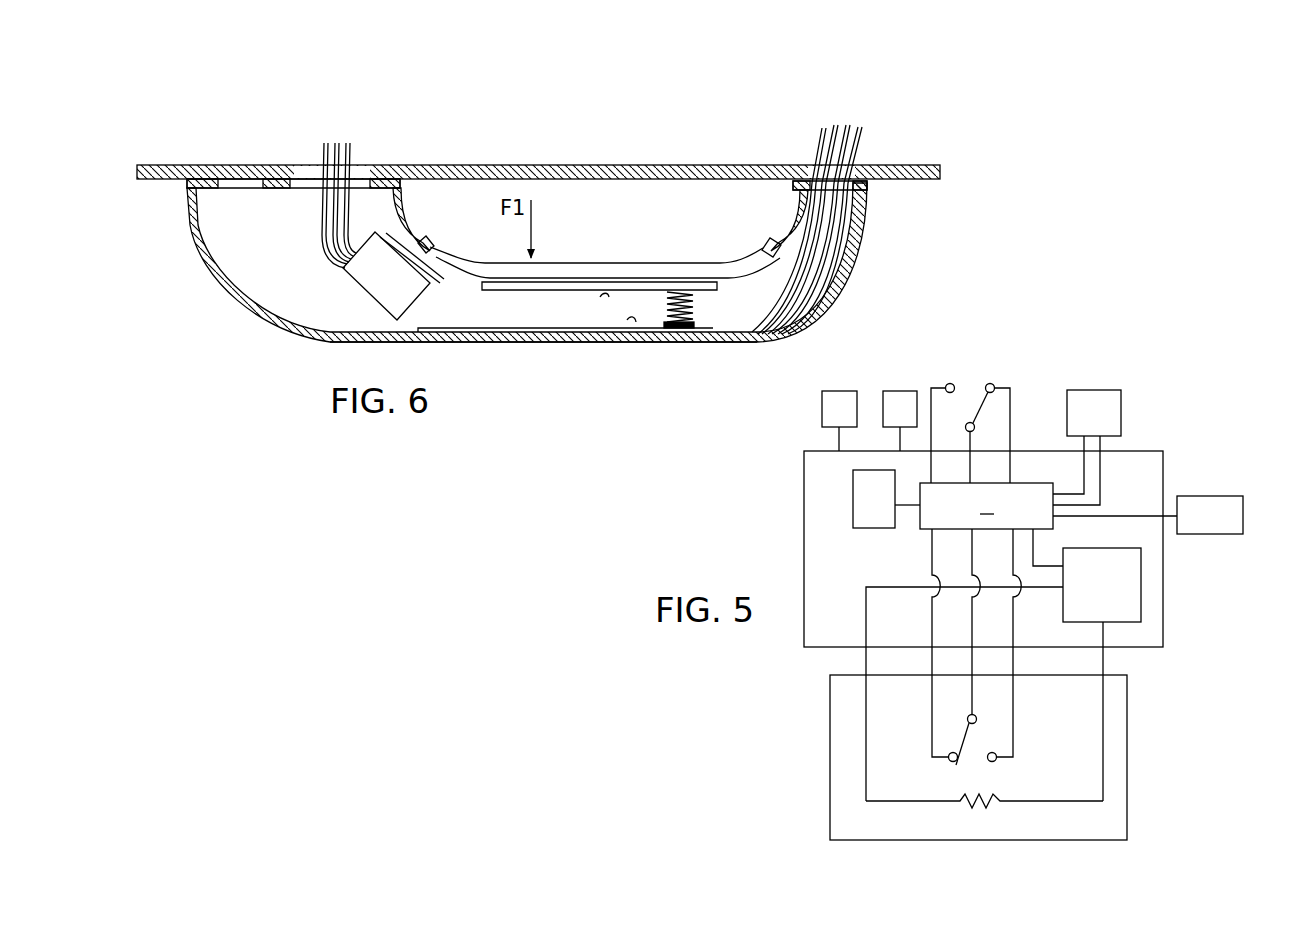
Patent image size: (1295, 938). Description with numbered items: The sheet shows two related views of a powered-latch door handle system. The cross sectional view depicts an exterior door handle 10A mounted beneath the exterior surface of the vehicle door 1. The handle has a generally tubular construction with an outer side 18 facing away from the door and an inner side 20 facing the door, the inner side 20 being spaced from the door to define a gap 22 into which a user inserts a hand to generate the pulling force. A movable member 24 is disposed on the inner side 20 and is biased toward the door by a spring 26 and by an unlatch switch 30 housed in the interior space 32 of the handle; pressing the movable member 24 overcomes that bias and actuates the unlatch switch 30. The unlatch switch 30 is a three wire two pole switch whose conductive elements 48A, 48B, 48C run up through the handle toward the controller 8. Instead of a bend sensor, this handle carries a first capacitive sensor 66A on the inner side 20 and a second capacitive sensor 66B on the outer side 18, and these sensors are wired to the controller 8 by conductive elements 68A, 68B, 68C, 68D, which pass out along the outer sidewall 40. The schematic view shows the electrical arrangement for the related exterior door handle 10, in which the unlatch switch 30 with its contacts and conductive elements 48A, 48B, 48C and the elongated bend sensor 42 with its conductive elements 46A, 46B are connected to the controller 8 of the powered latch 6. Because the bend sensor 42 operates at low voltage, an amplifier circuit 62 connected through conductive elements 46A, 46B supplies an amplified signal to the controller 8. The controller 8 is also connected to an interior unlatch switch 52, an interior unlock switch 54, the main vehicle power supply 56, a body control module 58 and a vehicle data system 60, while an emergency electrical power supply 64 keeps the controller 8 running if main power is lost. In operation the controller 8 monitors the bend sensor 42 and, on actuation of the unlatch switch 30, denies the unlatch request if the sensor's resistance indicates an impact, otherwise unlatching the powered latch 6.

In FIG. 6, the vehicle door 1 is at (162, 190).
In FIG. 6, the exterior door handle 10A is at (248, 318).
In FIG. 6, the conductive element 48A is at (327, 143).
In FIG. 5, the conductive element 48A is at (932, 660).
In FIG. 6, the conductive element 48B is at (338, 143).
In FIG. 5, the conductive element 48B is at (970, 620).
In FIG. 6, the conductive element 48C is at (349, 143).
In FIG. 5, the conductive element 48C is at (1013, 627).
In FIG. 6, the unlatch switch 30 is at (345, 268).
In FIG. 5, the unlatch switch 30 is at (1021, 761).
In FIG. 6, the inner side 20 is at (638, 262).
In FIG. 6, the movable member 24 is at (693, 263).
In FIG. 6, the gap 22 is at (595, 248).
In FIG. 6, the interior space 32 is at (550, 318).
In FIG. 6, the spring 26 is at (693, 302).
In FIG. 6, the outer sidewall 40 is at (577, 343).
In FIG. 6, the outer side 18 is at (537, 342).
In FIG. 6, the first capacitive sensor 66A is at (600, 297).
In FIG. 6, the second capacitive sensor 66B is at (627, 320).
In FIG. 6, the conductive element 68A is at (822, 130).
In FIG. 6, the conductive element 68B is at (836, 125).
In FIG. 6, the conductive element 68C is at (849, 125).
In FIG. 6, the conductive element 68D is at (862, 126).
In FIG. 5, the powered latch 6 is at (1168, 608).
In FIG. 5, the controller 8 is at (986, 506).
In FIG. 5, the emergency electrical power supply 64 is at (867, 482).
In FIG. 5, the interior unlock switch 54 is at (838, 398).
In FIG. 5, the main vehicle power supply 56 is at (901, 398).
In FIG. 5, the interior unlatch switch 52 is at (1010, 382).
In FIG. 5, the body control module 58 is at (1097, 400).
In FIG. 5, the vehicle data system 60 is at (1207, 502).
In FIG. 5, the amplifier circuit 62 is at (1125, 578).
In FIG. 5, the conductive element 46A is at (866, 660).
In FIG. 5, the conductive element 46B is at (1103, 660).
In FIG. 5, the elongated bend sensor 42 is at (1015, 803).
In FIG. 5, the exterior door handle 10 is at (1127, 807).